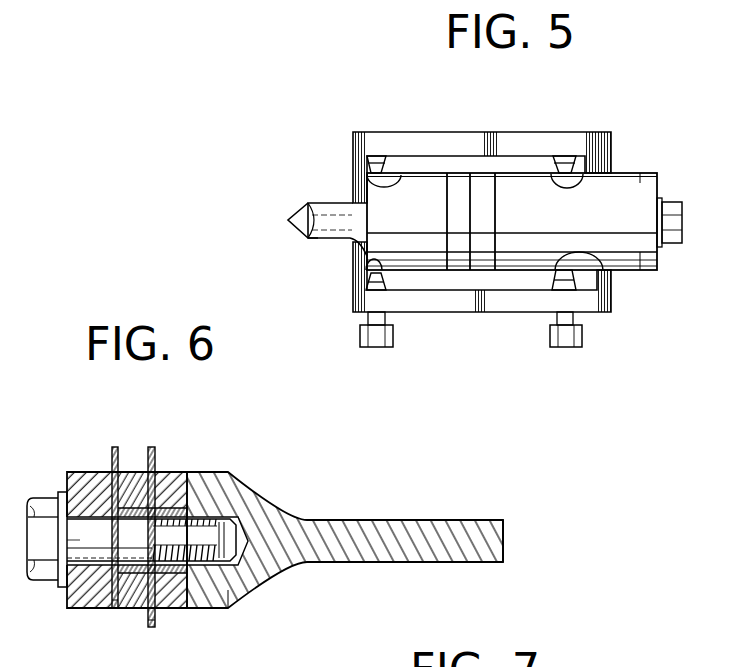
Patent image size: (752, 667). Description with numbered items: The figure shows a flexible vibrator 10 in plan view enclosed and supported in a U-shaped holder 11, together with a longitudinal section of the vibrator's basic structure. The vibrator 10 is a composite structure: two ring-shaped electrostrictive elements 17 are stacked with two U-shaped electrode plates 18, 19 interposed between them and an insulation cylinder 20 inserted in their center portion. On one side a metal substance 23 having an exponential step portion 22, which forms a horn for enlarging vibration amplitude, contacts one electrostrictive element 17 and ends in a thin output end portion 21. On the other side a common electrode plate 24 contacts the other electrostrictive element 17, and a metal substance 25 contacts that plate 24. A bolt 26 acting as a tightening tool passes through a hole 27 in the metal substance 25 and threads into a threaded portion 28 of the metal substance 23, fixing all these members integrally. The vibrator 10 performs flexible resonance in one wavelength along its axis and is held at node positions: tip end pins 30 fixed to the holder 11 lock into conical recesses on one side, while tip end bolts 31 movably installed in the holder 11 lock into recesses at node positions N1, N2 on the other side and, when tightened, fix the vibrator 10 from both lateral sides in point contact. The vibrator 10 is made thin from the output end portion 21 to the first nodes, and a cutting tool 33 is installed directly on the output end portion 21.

In FIG. 5, the flexible vibrator 10 is at (643, 267).
In FIG. 6, the flexible vibrator 10 is at (245, 428).
In FIG. 5, the holder 11 is at (487, 300).
In FIG. 5, the electrostrictive element 17 is at (484, 188).
In FIG. 6, the electrostrictive element 17 is at (135, 470).
In FIG. 6, the electrode plate 18 is at (152, 447).
In FIG. 6, the electrode plate 19 is at (156, 628).
In FIG. 6, the insulation cylinder 20 is at (128, 582).
In FIG. 5, the output end portion 21 is at (308, 240).
In FIG. 6, the output end portion 21 is at (504, 535).
In FIG. 6, the exponential step portion 22 is at (270, 505).
In FIG. 5, the metal substance 23 is at (332, 211).
In FIG. 6, the metal substance 23 is at (356, 522).
In FIG. 6, the common electrode plate 24 is at (114, 447).
In FIG. 5, the metal substance 25 is at (633, 190).
In FIG. 6, the metal substance 25 is at (100, 593).
In FIG. 5, the bolt 26 is at (677, 218).
In FIG. 6, the bolt 26 is at (92, 528).
In FIG. 6, the hole 27 is at (95, 552).
In FIG. 6, the threaded portion 28 is at (223, 600).
In FIG. 5, the tip end pin 30 is at (374, 156).
In FIG. 5, the tip end bolt 31 is at (390, 318).
In FIG. 5, the cutting tool 33 is at (295, 218).
In FIG. 5, the node position N1 is at (403, 178).
In FIG. 5, the node position N2 is at (583, 180).